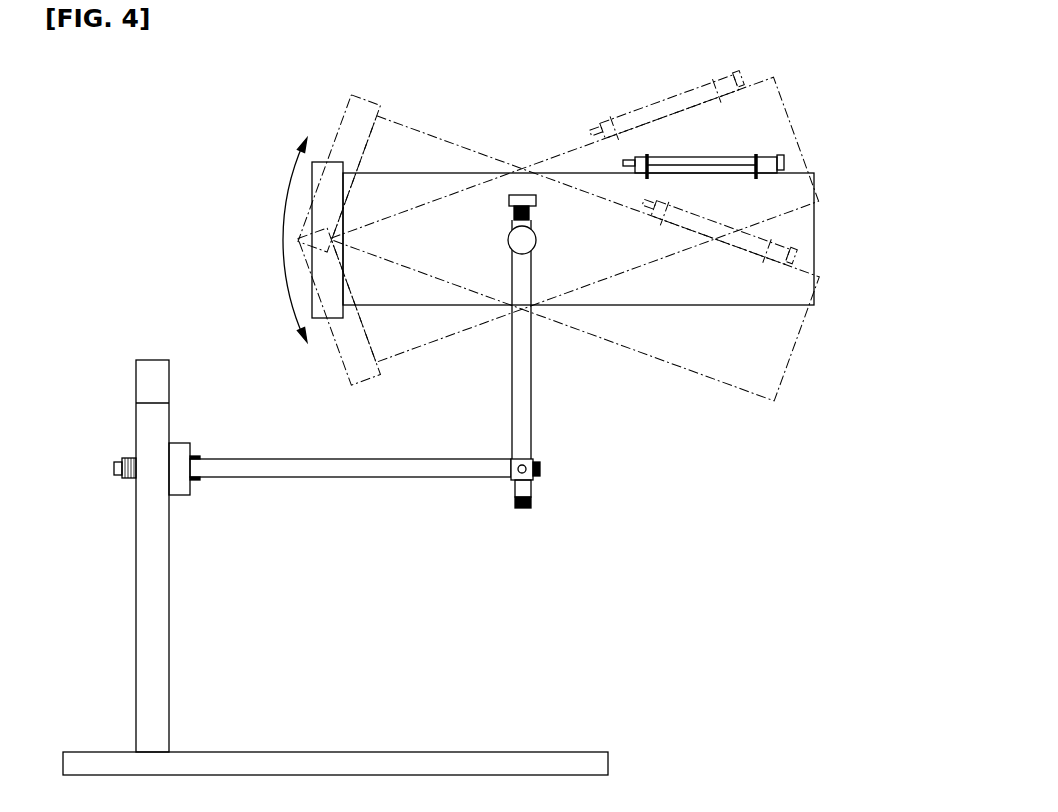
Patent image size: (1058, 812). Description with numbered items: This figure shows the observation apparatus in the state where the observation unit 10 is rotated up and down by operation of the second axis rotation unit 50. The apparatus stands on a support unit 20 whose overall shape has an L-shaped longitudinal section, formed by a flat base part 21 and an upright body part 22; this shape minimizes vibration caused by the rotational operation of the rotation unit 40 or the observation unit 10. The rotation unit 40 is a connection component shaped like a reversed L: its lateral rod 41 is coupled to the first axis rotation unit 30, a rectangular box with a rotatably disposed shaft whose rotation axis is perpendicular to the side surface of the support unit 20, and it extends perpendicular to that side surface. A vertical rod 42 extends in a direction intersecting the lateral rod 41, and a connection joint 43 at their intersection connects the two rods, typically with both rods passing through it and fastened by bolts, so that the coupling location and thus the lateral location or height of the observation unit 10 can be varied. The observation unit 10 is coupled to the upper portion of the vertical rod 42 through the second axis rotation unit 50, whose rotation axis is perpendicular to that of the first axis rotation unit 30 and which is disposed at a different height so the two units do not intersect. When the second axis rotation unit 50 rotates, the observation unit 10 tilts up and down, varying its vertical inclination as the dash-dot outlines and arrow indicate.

The observation unit 10 is at (603, 193).
The support unit 20 is at (335, 567).
The base part 21 is at (174, 765).
The body part 22 is at (153, 673).
The first axis rotation unit 30 is at (183, 478).
The rotation unit 40 is at (434, 506).
The lateral rod 41 is at (485, 472).
The vertical rod 42 is at (522, 451).
The connection joint 43 is at (532, 495).
The second axis rotation unit 50 is at (523, 239).